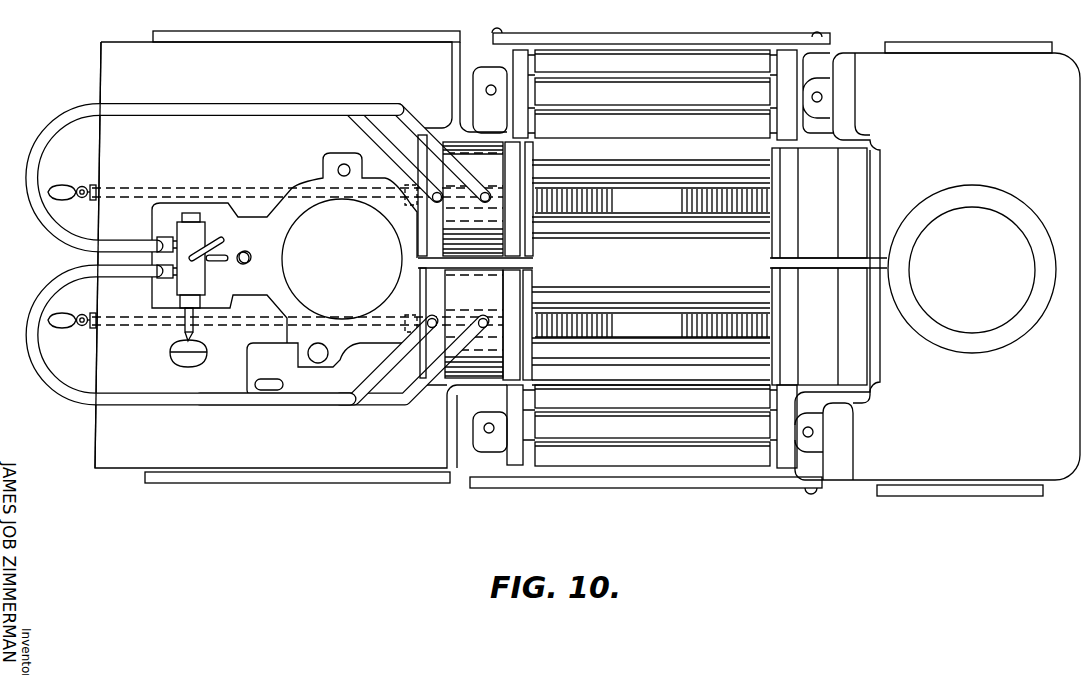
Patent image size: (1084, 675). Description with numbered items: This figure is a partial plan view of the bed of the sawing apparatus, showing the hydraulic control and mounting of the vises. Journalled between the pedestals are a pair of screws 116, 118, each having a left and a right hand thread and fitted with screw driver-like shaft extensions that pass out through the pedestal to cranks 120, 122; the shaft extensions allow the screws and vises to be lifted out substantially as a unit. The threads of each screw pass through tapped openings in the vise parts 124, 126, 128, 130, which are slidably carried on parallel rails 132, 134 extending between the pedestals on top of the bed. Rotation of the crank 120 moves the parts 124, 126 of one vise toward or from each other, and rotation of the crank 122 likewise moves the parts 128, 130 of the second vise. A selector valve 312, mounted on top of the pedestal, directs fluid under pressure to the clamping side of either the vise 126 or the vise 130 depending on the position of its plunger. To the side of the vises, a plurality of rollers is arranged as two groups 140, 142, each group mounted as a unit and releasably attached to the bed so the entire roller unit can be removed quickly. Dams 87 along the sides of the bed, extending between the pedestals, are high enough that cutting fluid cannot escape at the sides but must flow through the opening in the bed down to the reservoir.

The dams 87 is at (716, 36).
The screw 116 is at (633, 200).
The screw 118 is at (650, 322).
The crank 120 is at (90, 183).
The crank 122 is at (90, 330).
The vise part 124 is at (860, 182).
The vise part 126 is at (510, 240).
The vise part 128 is at (855, 358).
The vise part 130 is at (512, 297).
The rail 132 is at (672, 170).
The rail 134 is at (650, 358).
The group of rollers 140 is at (692, 466).
The group of rollers 142 is at (587, 62).
The selector valve 312 is at (210, 207).